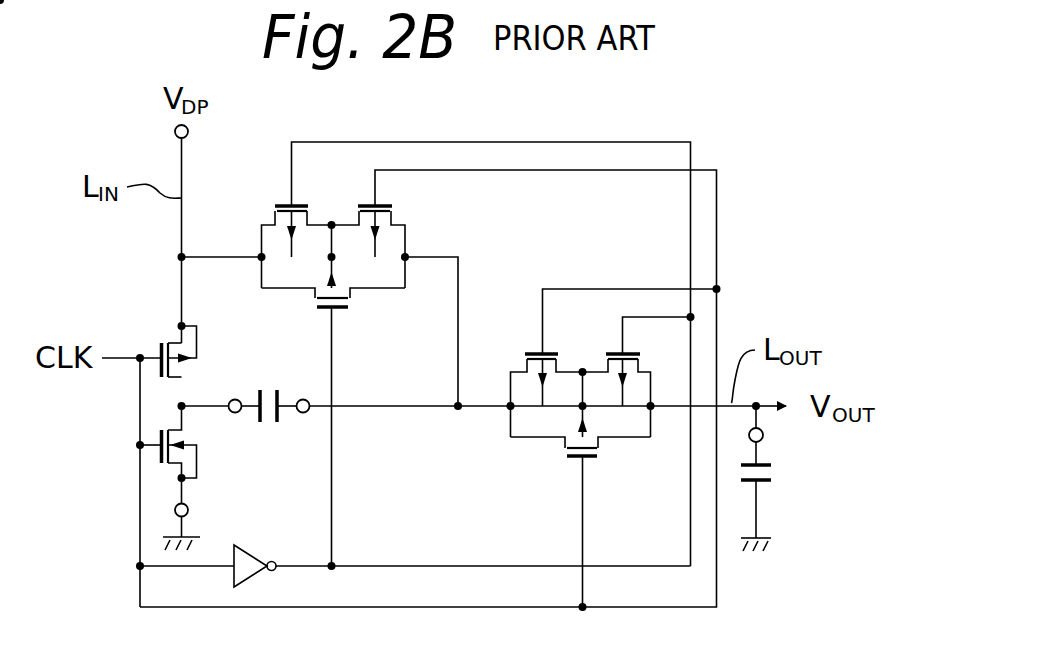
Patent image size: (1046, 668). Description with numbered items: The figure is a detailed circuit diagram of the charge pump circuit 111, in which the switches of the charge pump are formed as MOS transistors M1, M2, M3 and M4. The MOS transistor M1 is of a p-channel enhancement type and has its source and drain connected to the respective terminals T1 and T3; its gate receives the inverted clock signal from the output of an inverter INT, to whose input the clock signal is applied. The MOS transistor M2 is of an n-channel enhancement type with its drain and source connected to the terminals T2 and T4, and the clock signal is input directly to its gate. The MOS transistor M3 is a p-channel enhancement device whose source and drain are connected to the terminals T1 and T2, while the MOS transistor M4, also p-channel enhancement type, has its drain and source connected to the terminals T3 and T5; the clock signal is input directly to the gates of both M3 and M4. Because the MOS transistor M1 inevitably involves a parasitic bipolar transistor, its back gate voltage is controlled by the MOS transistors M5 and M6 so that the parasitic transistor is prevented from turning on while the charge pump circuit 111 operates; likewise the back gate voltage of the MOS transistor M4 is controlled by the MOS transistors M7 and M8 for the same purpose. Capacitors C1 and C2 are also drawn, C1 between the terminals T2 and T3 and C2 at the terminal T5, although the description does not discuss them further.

The charge pump circuit 111 is at (650, 128).
The MOS transistor M1 is at (352, 298).
The MOS transistor M2 is at (193, 437).
The MOS transistor M3 is at (192, 368).
The MOS transistor M4 is at (592, 467).
The MOS transistor M5 is at (272, 207).
The MOS transistor M6 is at (393, 217).
The MOS transistor M7 is at (530, 352).
The MOS transistor M8 is at (613, 352).
The terminal T1 is at (190, 133).
The terminal T2 is at (238, 398).
The terminal T3 is at (303, 398).
The terminal T4 is at (188, 512).
The terminal T5 is at (763, 437).
The capacitor C1 is at (250, 417).
The capacitor C2 is at (758, 483).
The inverter INT is at (260, 560).